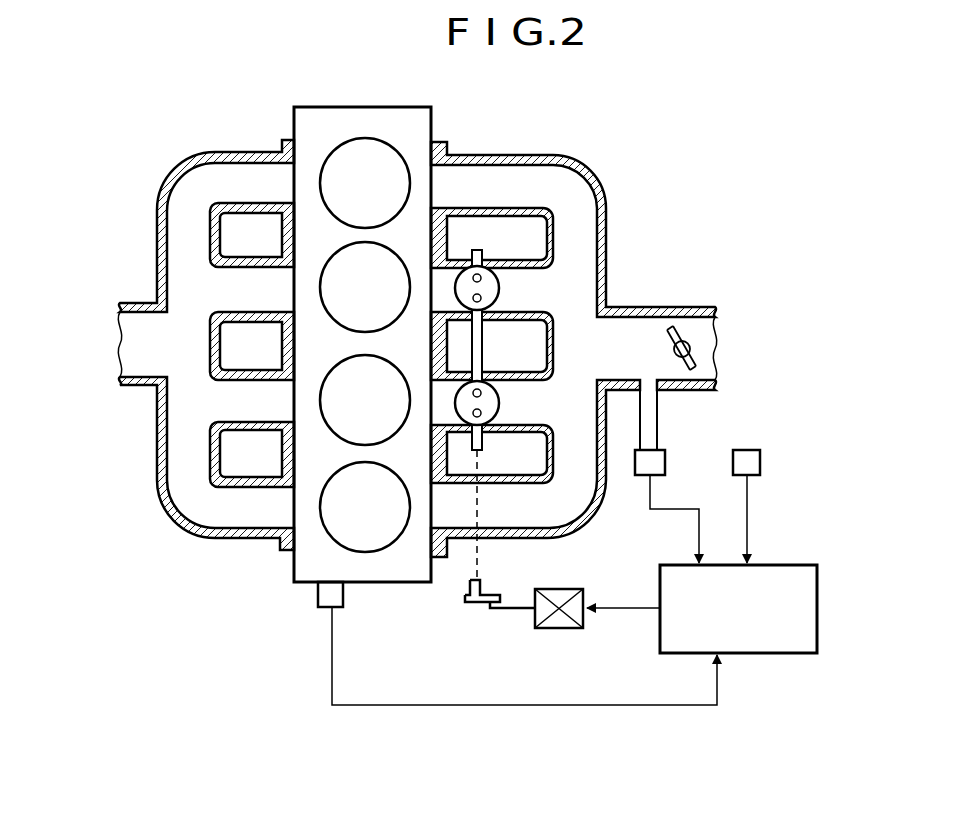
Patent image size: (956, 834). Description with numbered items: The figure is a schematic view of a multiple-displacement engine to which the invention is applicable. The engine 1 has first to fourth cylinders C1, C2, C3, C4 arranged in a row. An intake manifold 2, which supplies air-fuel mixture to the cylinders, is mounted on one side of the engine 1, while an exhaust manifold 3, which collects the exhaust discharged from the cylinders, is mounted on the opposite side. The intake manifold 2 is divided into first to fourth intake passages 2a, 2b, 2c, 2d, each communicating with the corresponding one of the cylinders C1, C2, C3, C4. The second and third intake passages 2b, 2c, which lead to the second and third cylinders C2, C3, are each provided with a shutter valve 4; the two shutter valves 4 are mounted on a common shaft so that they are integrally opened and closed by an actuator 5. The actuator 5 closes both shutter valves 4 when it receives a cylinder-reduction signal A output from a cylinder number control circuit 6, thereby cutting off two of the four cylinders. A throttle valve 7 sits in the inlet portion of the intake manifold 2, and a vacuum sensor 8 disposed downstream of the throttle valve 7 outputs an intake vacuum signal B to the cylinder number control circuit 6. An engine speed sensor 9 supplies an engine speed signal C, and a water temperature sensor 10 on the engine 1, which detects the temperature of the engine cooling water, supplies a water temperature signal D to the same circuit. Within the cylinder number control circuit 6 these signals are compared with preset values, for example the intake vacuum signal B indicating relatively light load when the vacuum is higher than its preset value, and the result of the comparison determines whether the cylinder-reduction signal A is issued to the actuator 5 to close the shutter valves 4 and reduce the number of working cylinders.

The engine 1 is at (281, 97).
The intake manifold 2 is at (574, 335).
The first intake passage 2a is at (458, 177).
The second intake passage 2b is at (518, 282).
The third intake passage 2c is at (513, 397).
The fourth intake passage 2d is at (497, 503).
The exhaust manifold 3 is at (173, 182).
The shutter valve 4 is at (489, 282).
The actuator 5 is at (570, 627).
The cylinder number control circuit 6 is at (777, 657).
The throttle valve 7 is at (697, 368).
The vacuum sensor 8 is at (665, 463).
The engine speed sensor 9 is at (760, 465).
The water temperature sensor 10 is at (318, 588).
The first cylinder C1 is at (337, 152).
The second cylinder C2 is at (327, 276).
The third cylinder C3 is at (328, 378).
The fourth cylinder C4 is at (328, 490).
The cylinder-reduction signal A is at (630, 608).
The intake vacuum signal B is at (697, 527).
The engine speed signal C is at (747, 535).
The water temperature signal D is at (455, 702).